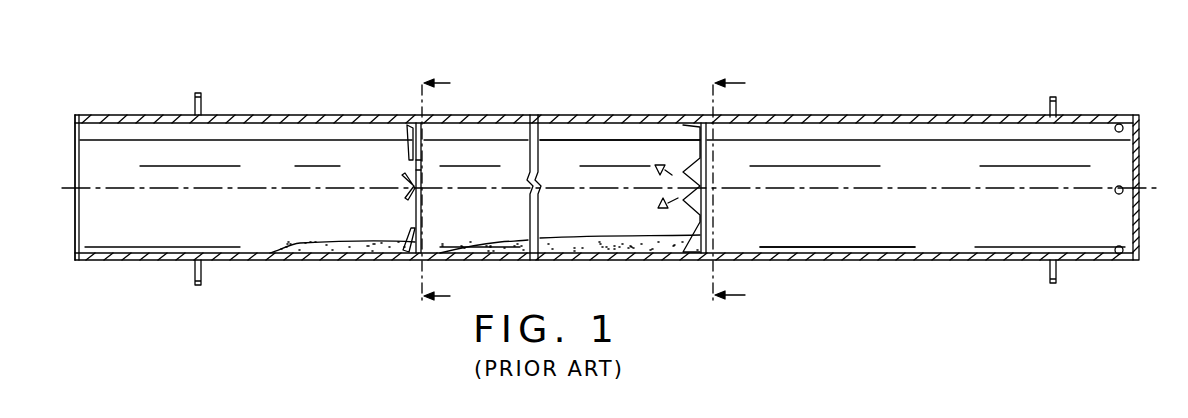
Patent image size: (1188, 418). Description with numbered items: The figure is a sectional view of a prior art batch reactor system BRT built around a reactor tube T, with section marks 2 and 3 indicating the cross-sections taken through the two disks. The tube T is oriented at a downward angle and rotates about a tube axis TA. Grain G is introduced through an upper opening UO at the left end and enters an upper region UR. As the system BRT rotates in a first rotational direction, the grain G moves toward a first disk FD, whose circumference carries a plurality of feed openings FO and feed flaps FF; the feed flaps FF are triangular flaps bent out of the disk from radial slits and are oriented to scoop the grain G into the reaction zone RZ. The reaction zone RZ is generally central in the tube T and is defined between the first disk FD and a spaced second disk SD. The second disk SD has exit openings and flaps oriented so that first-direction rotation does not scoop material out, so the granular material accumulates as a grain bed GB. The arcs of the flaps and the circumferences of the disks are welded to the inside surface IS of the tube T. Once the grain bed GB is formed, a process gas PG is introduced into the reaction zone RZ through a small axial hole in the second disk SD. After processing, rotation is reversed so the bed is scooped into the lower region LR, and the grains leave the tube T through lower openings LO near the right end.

The reactor tube T is at (895, 262).
The upper region UR is at (268, 133).
The lower region LR is at (928, 150).
The grain G is at (103, 205).
The upper opening UO is at (77, 240).
The first disk FD is at (420, 224).
The feed flaps FF is at (407, 130).
The feed openings FO is at (418, 170).
The reaction zone RZ is at (570, 135).
The grain bed GB is at (598, 240).
The second disk SD is at (705, 229).
The process gas PG is at (683, 183).
The inside surface IS is at (945, 260).
The lower openings LO is at (1114, 185).
The tube axis TA is at (1146, 190).
The batch reactor system BRT is at (870, 61).
The section line 2- 2 is at (419, 197).
The section line 3- 3 is at (743, 196).